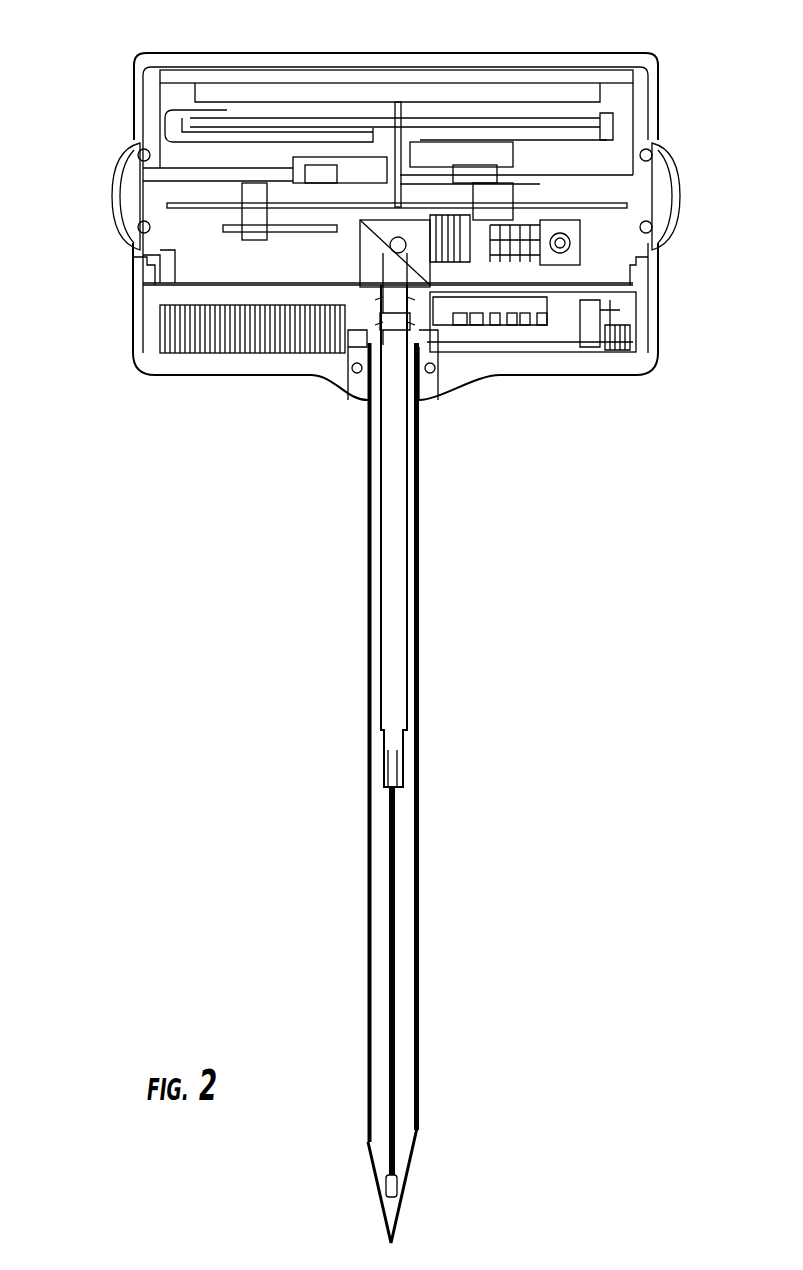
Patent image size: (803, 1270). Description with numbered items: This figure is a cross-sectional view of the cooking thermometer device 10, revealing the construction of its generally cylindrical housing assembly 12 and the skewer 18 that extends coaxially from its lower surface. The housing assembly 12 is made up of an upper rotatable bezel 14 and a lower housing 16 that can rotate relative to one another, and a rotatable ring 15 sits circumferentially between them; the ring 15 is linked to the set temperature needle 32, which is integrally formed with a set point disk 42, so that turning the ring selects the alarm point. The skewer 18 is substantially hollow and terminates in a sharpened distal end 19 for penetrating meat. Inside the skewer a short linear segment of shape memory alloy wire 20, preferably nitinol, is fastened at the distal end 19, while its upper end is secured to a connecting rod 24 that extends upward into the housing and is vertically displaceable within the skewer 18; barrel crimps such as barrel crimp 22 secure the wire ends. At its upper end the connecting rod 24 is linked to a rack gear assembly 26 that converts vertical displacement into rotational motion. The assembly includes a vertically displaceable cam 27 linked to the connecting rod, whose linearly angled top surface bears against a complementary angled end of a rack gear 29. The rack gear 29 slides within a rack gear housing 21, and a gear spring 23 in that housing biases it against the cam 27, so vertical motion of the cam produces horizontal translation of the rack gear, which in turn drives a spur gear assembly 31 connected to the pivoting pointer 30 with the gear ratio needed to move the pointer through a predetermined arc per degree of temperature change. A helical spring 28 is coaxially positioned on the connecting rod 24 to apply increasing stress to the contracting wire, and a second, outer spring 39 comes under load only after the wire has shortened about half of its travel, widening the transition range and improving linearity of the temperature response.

The cooking thermometer device 10 is at (190, 614).
The housing assembly 12 is at (148, 425).
The rotatable bezel 14 is at (660, 70).
The rotatable ring 15 is at (128, 192).
The lower housing 16 is at (652, 310).
The skewer 18 is at (415, 602).
The sharpened distal end 19 is at (397, 1238).
The shape memory alloy wire 20 is at (393, 930).
The rack gear housing 21 is at (563, 250).
The barrel crimp 22 is at (403, 1140).
The gear spring 23 is at (580, 253).
The connecting rod 24 is at (392, 557).
The rack gear assembly 26 is at (452, 278).
The cam 27 is at (373, 270).
The helical spring 28 is at (422, 300).
The rack gear 29 is at (423, 232).
The pivoting pointer 30 is at (357, 105).
The spur gear assembly 31 is at (533, 197).
The set temperature needle 32 is at (207, 110).
The second spring 39 is at (370, 315).
The set point disk 42 is at (217, 143).